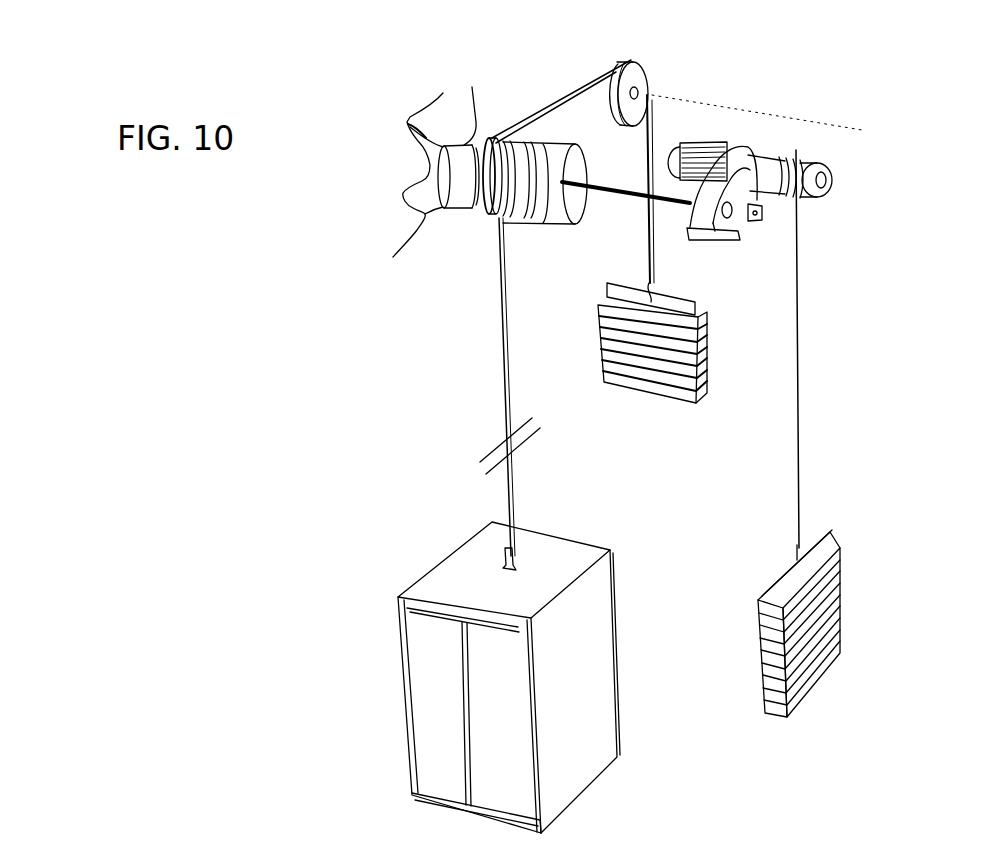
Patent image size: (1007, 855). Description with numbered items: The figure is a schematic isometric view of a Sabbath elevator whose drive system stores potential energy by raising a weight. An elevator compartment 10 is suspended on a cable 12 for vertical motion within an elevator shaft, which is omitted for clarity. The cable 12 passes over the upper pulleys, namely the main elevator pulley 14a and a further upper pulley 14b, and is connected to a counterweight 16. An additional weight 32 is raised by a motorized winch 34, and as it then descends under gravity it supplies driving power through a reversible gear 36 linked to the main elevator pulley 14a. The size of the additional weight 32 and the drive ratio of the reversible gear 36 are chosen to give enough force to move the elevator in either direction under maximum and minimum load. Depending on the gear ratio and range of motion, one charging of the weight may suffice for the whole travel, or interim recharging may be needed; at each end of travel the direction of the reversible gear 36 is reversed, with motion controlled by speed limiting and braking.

The elevator compartment 10 is at (400, 663).
The cable 12 is at (500, 401).
The main elevator pulley 14a is at (482, 146).
The upper pulley 14b is at (638, 60).
The counterweight 16 is at (642, 384).
The additional weight 32 is at (818, 603).
The motorized winch 34 is at (697, 150).
The reversible gear 36 is at (738, 206).